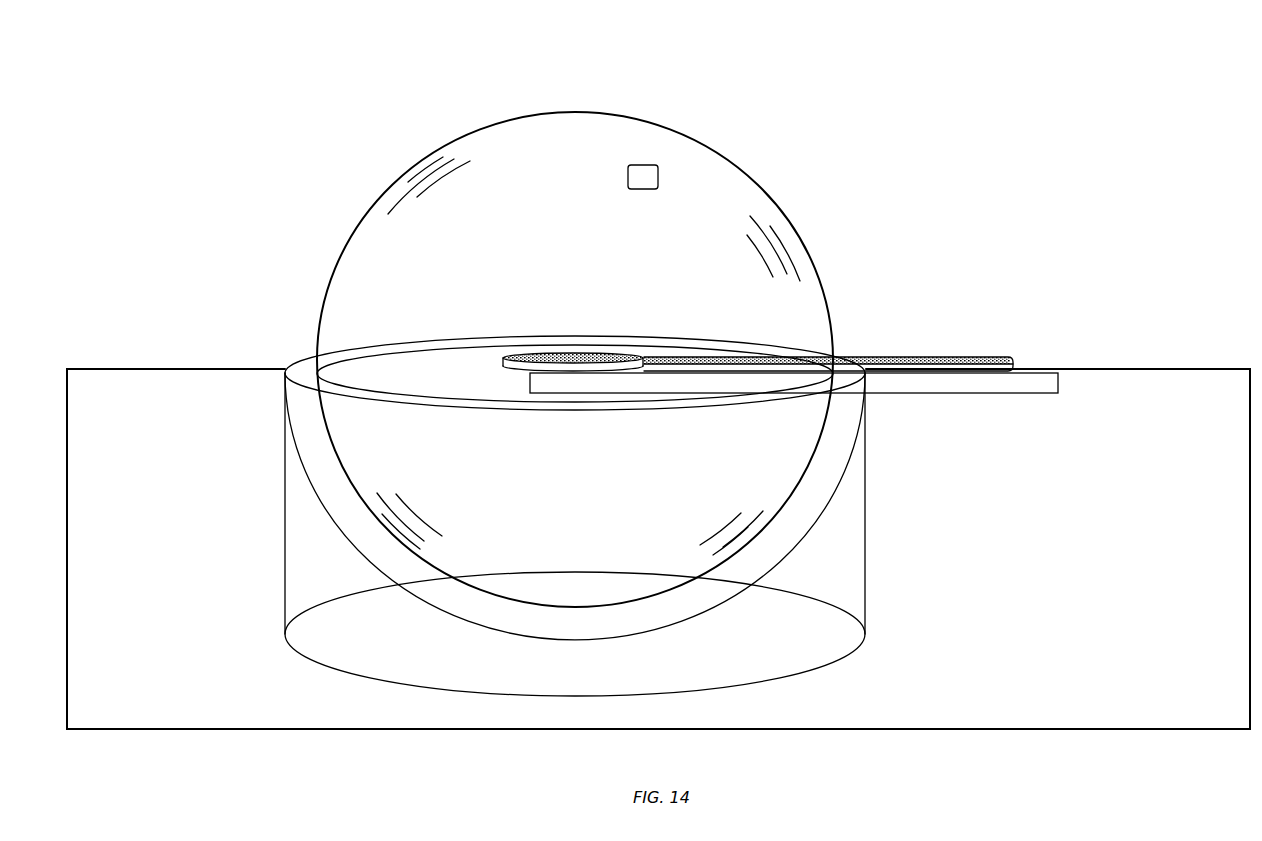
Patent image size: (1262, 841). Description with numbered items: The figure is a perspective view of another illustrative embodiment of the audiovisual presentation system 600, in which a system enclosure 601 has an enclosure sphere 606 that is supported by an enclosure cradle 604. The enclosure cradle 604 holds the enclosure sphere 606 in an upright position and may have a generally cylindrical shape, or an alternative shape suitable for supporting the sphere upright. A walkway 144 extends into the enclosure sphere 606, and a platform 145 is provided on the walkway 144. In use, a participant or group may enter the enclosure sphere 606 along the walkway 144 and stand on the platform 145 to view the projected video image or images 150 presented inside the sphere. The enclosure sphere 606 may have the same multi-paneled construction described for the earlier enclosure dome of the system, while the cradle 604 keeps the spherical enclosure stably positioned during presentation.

The audiovisual presentation system 600 is at (575, 310).
The system enclosure 601 is at (462, 130).
The enclosure sphere 606 is at (692, 135).
The projected video image 150 is at (657, 178).
The enclosure cradle 604 is at (842, 518).
The walkway 144 is at (708, 358).
The platform 145 is at (573, 353).